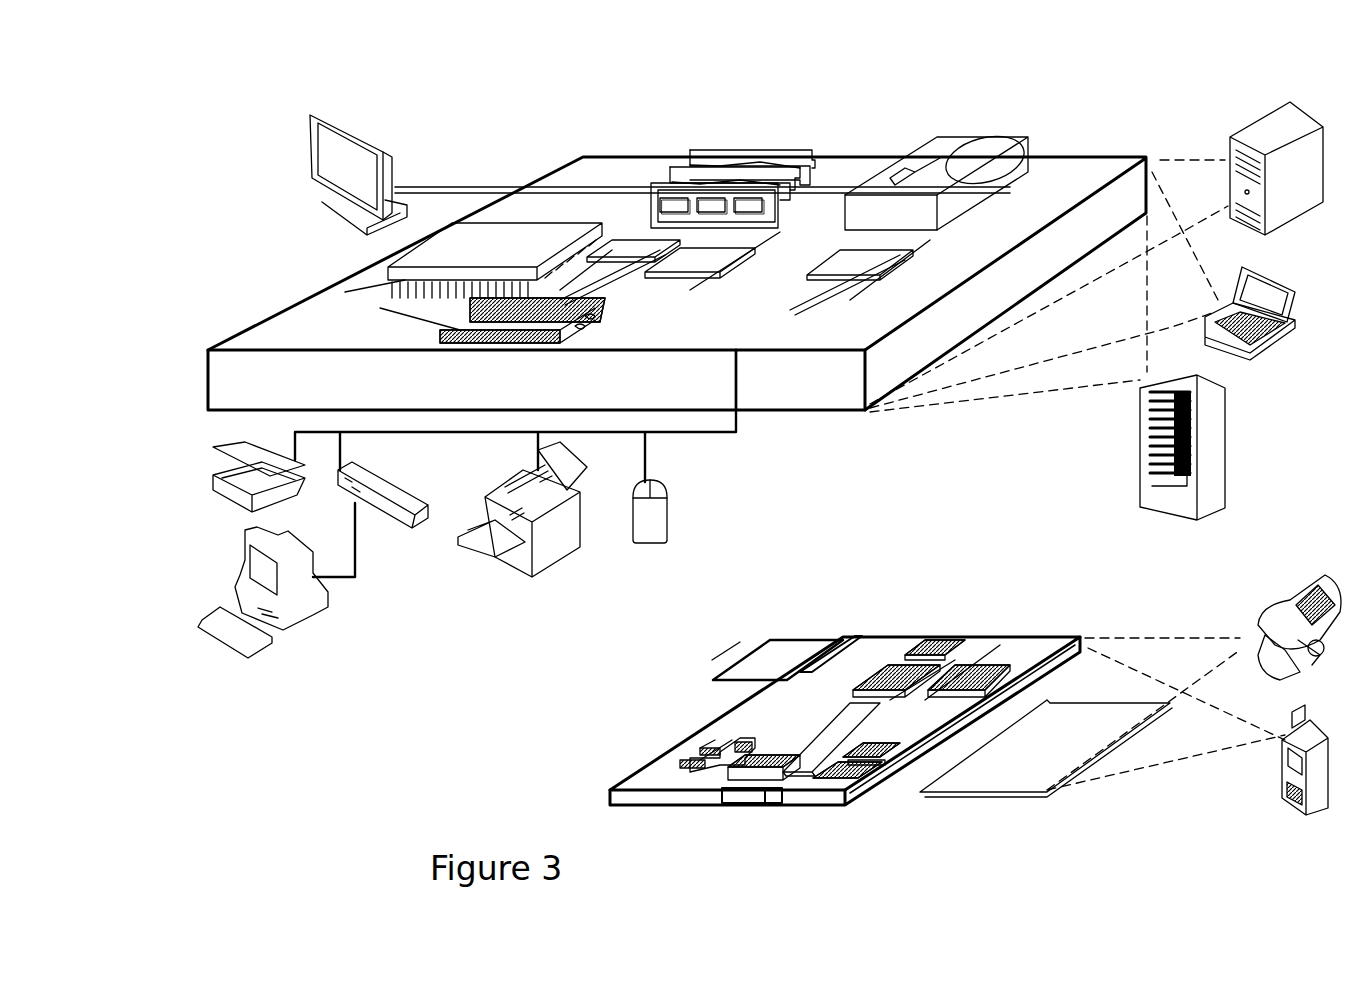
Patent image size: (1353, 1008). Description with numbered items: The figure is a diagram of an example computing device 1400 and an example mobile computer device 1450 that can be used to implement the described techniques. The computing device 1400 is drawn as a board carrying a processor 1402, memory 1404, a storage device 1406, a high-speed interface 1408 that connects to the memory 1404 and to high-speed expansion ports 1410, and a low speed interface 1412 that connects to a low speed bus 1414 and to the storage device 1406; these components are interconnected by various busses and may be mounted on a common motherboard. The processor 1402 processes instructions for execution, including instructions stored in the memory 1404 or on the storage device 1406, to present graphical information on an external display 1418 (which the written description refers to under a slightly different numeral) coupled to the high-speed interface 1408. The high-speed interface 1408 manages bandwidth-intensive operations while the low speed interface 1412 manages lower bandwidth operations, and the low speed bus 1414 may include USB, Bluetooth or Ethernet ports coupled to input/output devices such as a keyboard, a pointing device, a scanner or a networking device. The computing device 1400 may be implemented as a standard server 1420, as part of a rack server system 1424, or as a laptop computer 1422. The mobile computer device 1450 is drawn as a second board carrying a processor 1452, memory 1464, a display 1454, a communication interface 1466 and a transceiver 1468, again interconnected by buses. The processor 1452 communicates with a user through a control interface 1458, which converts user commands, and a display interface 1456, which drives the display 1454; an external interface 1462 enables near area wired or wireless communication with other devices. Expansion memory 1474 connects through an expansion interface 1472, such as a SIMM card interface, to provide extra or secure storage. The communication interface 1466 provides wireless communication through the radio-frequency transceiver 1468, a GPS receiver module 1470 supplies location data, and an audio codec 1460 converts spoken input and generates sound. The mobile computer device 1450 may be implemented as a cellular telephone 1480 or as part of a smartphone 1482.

The computing device 1400 is at (510, 128).
The processor 1402 is at (385, 278).
The memory 1404 is at (695, 123).
The storage device 1406 is at (930, 142).
The high-speed interface 1408 is at (640, 222).
The high-speed expansion ports 1410 is at (380, 308).
The low speed interface 1412 is at (860, 258).
The low speed bus 1414 is at (745, 352).
The display 1418 is at (318, 130).
The standard server 1420 is at (1230, 142).
The laptop computer 1422 is at (1248, 280).
The rack server system 1424 is at (1140, 468).
The mobile computer device 1450 is at (822, 612).
The processor 1452 is at (775, 806).
The display 1454 is at (1047, 797).
The display interface 1456 is at (858, 795).
The control interface 1458 is at (890, 778).
The audio codec 1460 is at (918, 772).
The external interface 1462 is at (745, 806).
The memory 1464 is at (690, 752).
The communication interface 1466 is at (968, 670).
The transceiver 1468 is at (890, 664).
The GPS receiver module 1470 is at (935, 648).
The expansion interface 1472 is at (812, 656).
The expansion memory 1474 is at (752, 652).
The cellular telephone 1480 is at (1305, 588).
The smartphone 1482 is at (1290, 716).